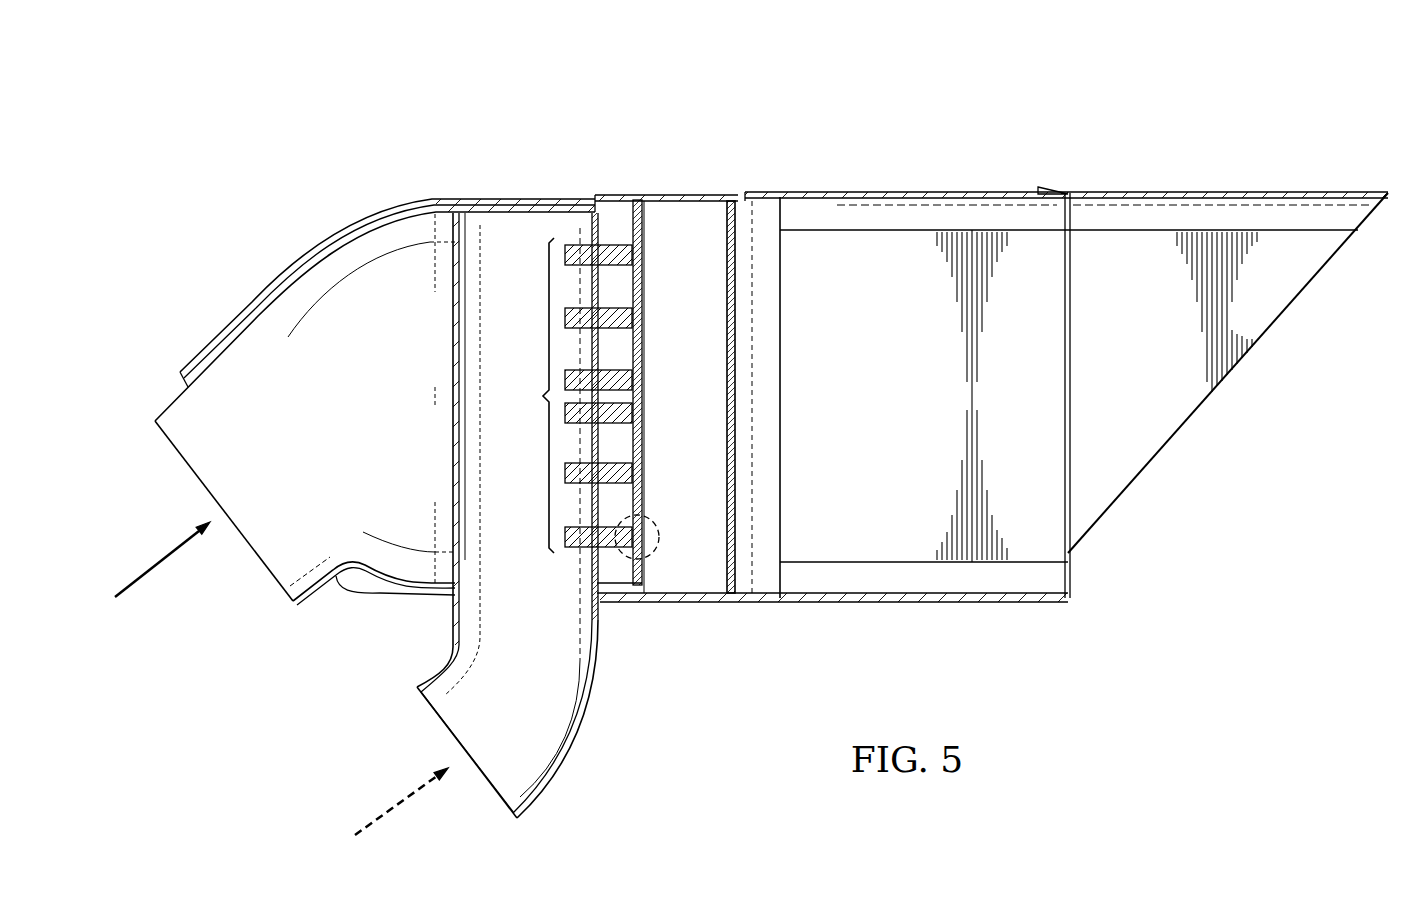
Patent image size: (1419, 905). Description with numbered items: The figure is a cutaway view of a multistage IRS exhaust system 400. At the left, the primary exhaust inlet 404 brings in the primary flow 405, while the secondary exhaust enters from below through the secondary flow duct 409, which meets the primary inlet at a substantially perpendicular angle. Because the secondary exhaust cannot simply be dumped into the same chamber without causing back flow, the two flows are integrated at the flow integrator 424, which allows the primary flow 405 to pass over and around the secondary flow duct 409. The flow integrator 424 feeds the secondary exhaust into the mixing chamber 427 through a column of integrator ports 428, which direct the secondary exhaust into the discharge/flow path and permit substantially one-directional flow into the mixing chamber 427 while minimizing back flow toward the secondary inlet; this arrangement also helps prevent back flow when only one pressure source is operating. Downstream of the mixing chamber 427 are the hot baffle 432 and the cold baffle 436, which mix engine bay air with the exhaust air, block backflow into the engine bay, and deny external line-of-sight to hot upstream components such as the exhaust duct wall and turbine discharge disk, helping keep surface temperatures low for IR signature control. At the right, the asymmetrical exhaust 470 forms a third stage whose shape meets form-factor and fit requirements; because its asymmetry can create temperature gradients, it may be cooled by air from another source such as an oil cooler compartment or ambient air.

The multistage IRS exhaust system 400 is at (1035, 102).
The primary exhaust inlet 404 is at (628, 446).
The primary flow 405 is at (325, 439).
The secondary flow duct 409 is at (528, 730).
The flow integrator 424 is at (622, 600).
The mixing chamber 427 is at (665, 228).
The integrator ports 428 is at (655, 523).
The hot baffle 432 is at (740, 213).
The cold baffle 436 is at (768, 218).
The asymmetrical exhaust 470 is at (1187, 427).